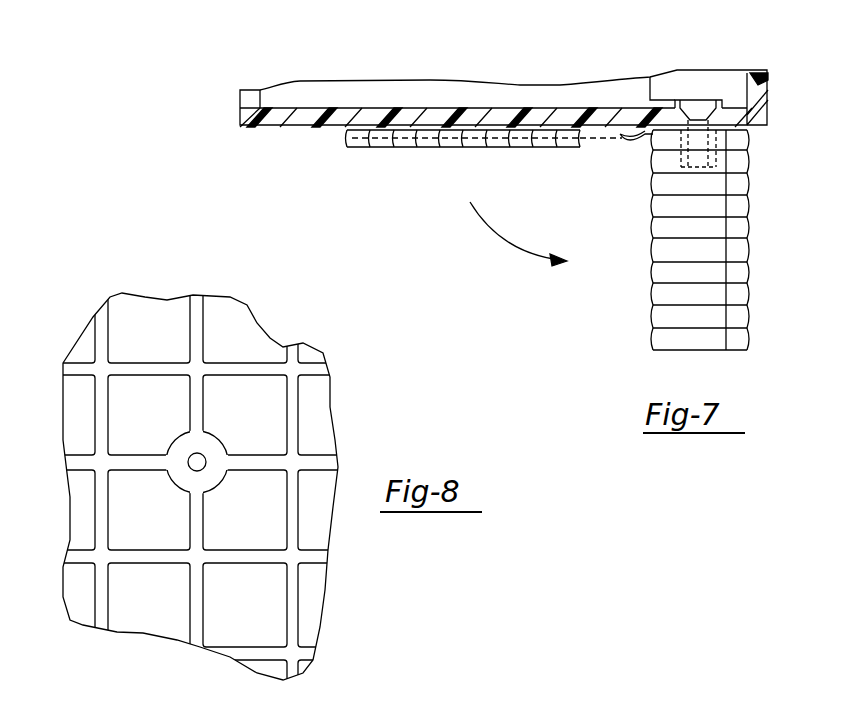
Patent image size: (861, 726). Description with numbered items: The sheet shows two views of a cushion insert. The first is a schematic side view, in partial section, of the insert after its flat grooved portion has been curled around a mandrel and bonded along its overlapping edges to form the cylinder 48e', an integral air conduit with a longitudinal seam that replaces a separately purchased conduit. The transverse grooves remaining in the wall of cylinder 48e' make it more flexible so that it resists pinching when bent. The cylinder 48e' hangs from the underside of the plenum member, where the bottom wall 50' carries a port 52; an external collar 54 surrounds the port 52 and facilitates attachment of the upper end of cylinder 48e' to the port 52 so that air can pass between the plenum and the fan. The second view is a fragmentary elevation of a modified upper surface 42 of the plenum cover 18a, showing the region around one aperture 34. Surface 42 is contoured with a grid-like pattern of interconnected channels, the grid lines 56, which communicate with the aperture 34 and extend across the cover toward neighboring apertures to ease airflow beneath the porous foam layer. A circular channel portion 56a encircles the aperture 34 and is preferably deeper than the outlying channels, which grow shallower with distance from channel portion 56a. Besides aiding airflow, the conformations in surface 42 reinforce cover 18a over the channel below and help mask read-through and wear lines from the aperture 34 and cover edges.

In FIG. 7, the top plate 50' is at (513, 76).
In FIG. 7, the port 52 is at (695, 112).
In FIG. 7, the external collar 54 is at (720, 154).
In FIG. 7, the cylinder 48e' is at (661, 240).
In FIG. 8, the cover 18a is at (231, 465).
In FIG. 8, the upper surface 42 is at (222, 315).
In FIG. 8, the grid lines 56 is at (102, 432).
In FIG. 8, the channel portion 56a is at (183, 477).
In FIG. 8, the aperture 34 is at (205, 453).